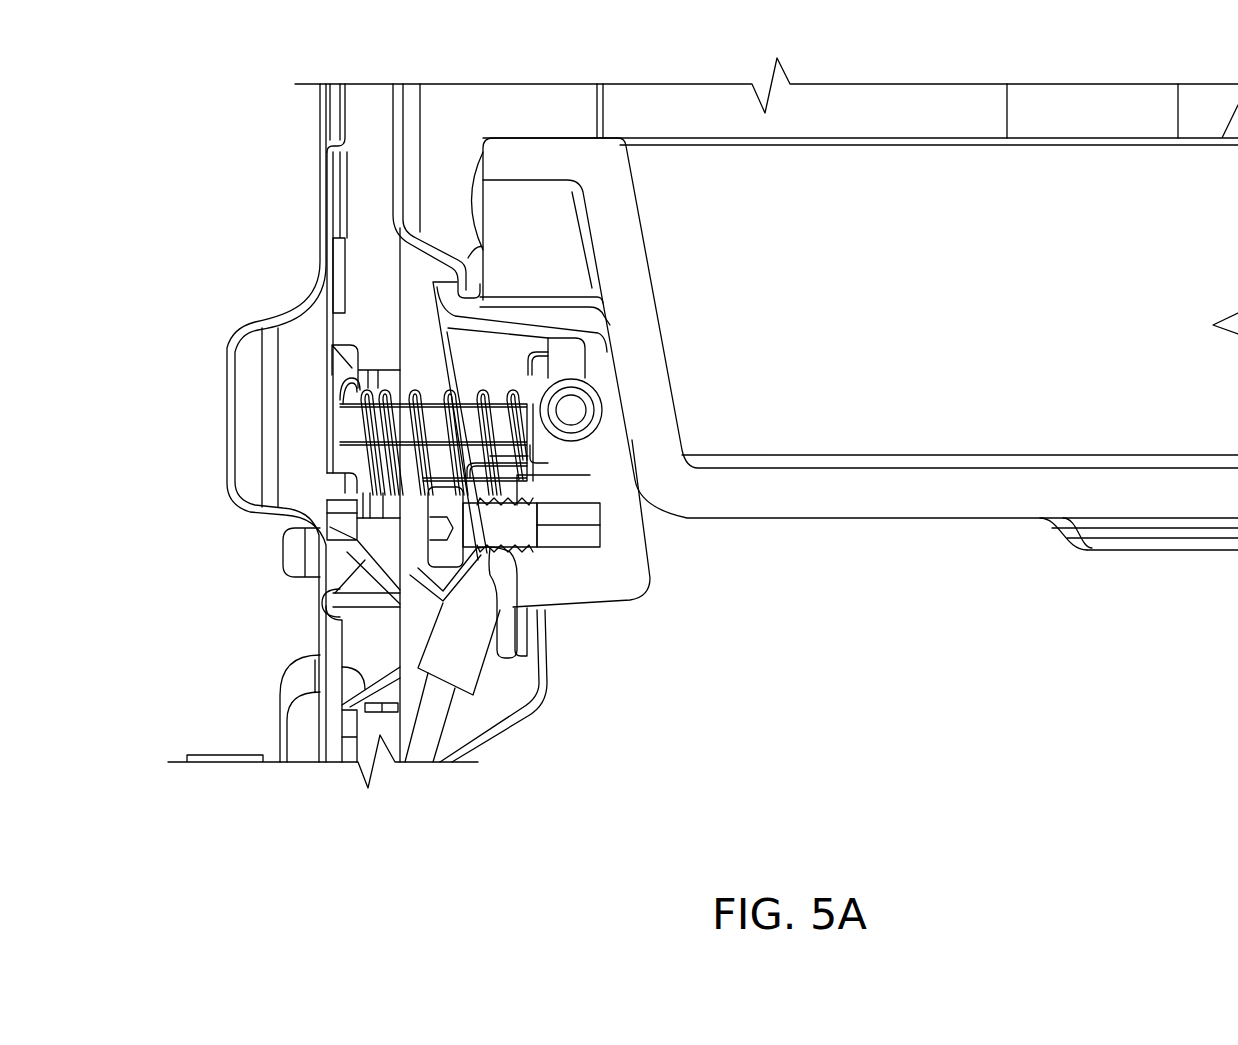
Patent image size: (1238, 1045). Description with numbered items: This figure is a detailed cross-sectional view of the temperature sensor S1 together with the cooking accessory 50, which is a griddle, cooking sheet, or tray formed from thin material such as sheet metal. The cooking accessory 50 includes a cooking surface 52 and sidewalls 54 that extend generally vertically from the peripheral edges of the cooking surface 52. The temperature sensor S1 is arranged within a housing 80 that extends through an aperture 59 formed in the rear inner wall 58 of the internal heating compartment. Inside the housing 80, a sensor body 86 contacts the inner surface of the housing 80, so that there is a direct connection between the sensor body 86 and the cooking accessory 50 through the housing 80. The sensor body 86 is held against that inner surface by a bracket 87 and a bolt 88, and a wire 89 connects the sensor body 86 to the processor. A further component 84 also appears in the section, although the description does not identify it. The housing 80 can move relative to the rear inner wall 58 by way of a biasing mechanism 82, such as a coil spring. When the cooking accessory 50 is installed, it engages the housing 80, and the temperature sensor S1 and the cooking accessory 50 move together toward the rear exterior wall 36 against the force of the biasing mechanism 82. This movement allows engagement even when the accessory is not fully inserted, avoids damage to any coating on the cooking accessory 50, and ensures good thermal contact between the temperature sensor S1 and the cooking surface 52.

The rear exterior wall 36 is at (305, 296).
The cooking accessory 50 is at (932, 350).
The cooking surface 52 is at (937, 470).
The sidewalls 54 is at (625, 246).
The rear inner wall 58 is at (413, 140).
The aperture 59 is at (542, 609).
The housing 80 is at (625, 585).
The biasing mechanism 82 is at (420, 390).
The spring 84 is at (413, 467).
The sensor body 86 is at (573, 446).
The bracket 87 is at (523, 458).
The bolt 88 is at (432, 576).
The wire 89 is at (408, 735).
The temperature sensor S1 is at (657, 521).